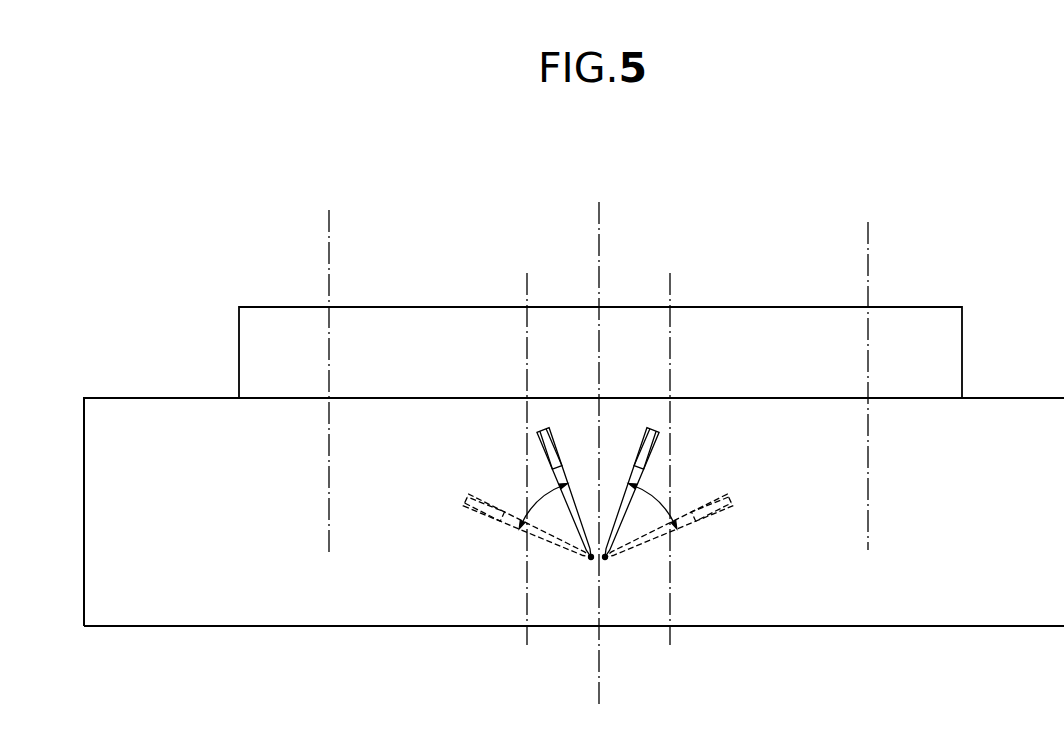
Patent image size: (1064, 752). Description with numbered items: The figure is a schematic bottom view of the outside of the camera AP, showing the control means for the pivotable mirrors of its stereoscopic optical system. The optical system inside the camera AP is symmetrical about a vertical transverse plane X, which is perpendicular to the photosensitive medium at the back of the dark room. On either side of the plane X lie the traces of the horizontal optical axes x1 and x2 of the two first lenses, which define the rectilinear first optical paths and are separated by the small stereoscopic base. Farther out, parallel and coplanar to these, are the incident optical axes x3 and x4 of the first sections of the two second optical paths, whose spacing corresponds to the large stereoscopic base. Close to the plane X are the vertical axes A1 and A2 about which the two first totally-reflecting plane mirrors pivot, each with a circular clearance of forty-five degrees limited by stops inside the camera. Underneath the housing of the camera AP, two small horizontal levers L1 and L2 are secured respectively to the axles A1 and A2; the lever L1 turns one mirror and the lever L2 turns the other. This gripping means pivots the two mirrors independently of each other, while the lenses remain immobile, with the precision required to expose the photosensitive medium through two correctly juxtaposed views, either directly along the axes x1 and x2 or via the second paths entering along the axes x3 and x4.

The camera AP is at (138, 395).
The small horizontal lever L1 is at (559, 445).
The small horizontal lever L2 is at (640, 445).
The vertical axis (axle) A1 is at (590, 558).
The vertical axis (axle) A2 is at (606, 558).
The vertical transverse plane X is at (599, 454).
The horizontal optical axis x1 is at (529, 461).
The horizontal optical axis x2 is at (670, 461).
The incident optical axis x3 is at (331, 384).
The incident optical axis x4 is at (871, 389).